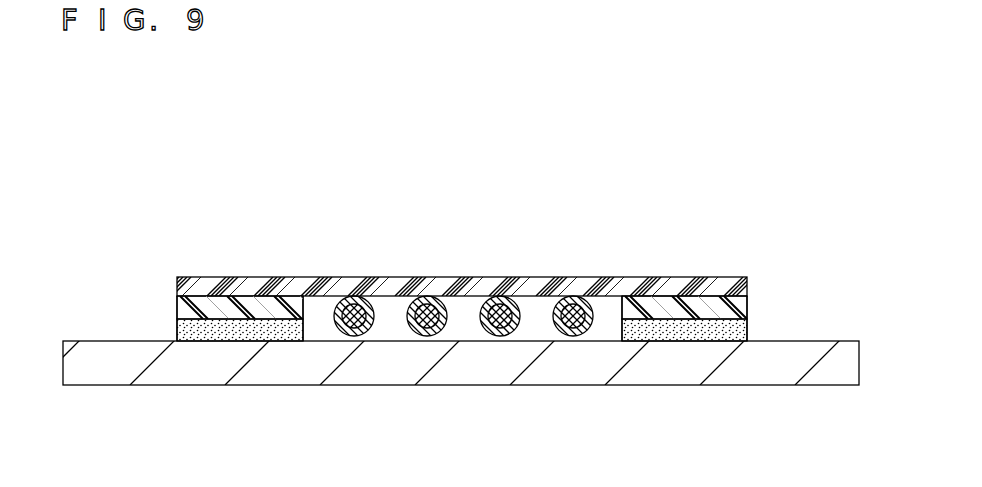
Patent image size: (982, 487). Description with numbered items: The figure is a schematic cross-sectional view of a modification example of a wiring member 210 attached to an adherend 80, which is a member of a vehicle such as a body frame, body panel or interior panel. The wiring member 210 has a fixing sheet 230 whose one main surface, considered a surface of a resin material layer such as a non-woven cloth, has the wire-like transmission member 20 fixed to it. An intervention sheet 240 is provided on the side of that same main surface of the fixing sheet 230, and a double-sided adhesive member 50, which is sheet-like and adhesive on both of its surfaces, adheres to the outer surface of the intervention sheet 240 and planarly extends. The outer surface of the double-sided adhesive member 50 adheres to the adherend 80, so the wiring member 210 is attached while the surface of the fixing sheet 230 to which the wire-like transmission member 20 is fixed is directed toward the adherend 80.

The wiring member 210 is at (447, 279).
The fixing sheet 230 is at (520, 293).
The intervention sheet 240 is at (177, 310).
The double-sided adhesive member 50 is at (177, 328).
The wire-like transmission member 20 is at (413, 331).
The adherend 80 is at (658, 376).